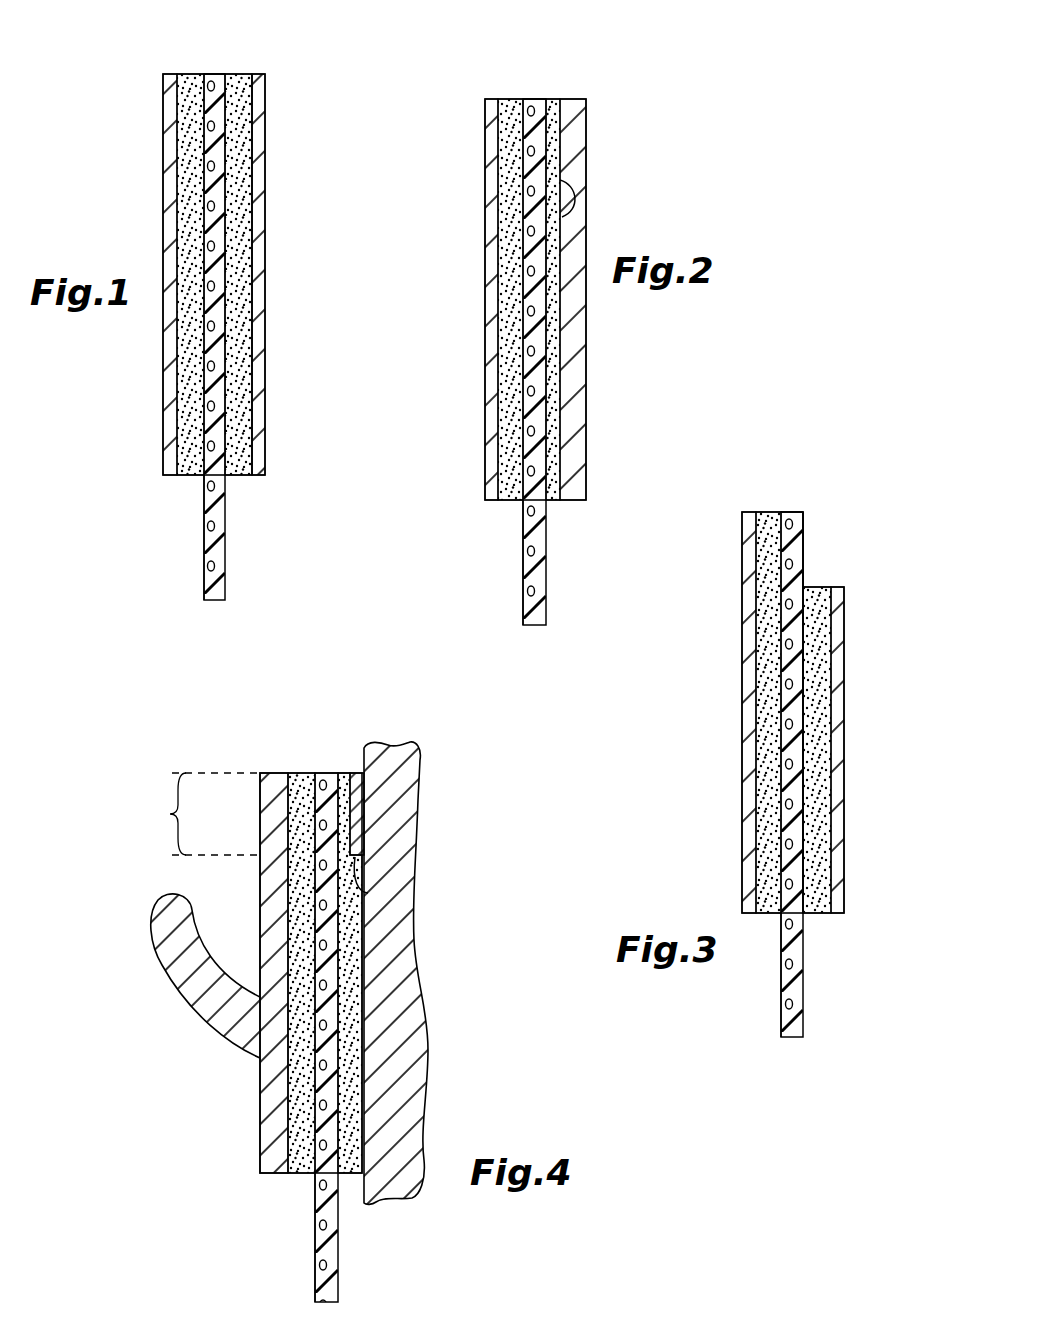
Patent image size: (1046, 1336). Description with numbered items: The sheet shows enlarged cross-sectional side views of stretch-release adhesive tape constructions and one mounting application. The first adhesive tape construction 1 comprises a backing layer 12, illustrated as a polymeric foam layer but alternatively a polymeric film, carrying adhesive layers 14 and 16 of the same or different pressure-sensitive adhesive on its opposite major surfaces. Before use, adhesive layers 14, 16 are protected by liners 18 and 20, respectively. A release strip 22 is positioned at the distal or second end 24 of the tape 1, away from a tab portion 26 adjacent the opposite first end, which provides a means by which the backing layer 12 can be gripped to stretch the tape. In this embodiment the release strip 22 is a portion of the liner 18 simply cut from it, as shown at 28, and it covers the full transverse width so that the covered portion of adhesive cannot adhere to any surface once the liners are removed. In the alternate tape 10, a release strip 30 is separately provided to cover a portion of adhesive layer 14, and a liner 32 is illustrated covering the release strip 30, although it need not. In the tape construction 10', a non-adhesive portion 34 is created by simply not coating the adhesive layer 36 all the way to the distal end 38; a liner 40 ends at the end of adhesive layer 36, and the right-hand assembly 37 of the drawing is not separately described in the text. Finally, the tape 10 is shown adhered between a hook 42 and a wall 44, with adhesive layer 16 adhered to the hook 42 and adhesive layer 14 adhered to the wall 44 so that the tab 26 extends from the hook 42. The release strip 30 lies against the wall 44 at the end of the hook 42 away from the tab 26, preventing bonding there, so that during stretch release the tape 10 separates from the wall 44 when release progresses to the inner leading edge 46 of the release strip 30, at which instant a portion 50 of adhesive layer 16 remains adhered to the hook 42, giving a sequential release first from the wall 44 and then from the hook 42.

In FIG. 1, the adhesive tape construction 1 is at (211, 309).
In FIG. 2, the tape 10 is at (534, 327).
In FIG. 4, the tape 10 is at (303, 1013).
In FIG. 3, the tape construction 10' is at (772, 748).
In FIG. 1, the backing layer 12 is at (218, 238).
In FIG. 2, the backing layer 12 is at (540, 355).
In FIG. 3, the backing layer 12 is at (797, 775).
In FIG. 4, the backing layer 12 is at (333, 1048).
In FIG. 1, the adhesive layer 14 is at (242, 476).
In FIG. 2, the adhesive layer 14 is at (565, 501).
In FIG. 4, the adhesive layer 14 is at (353, 1175).
In FIG. 1, the adhesive layer 16 is at (193, 476).
In FIG. 2, the adhesive layer 16 is at (512, 501).
In FIG. 3, the adhesive layer 16 is at (766, 914).
In FIG. 4, the adhesive layer 16 is at (301, 1175).
In FIG. 1, the liner 18 is at (266, 362).
In FIG. 1, the liner 20 is at (163, 322).
In FIG. 2, the liner 20 is at (486, 266).
In FIG. 3, the liner 20 is at (742, 730).
In FIG. 1, the release strip 22 is at (266, 121).
In FIG. 1, the second end 24 is at (211, 74).
In FIG. 2, the second end 24 is at (535, 99).
In FIG. 1, the tab portion 26 is at (212, 594).
In FIG. 2, the tab portion 26 is at (530, 617).
In FIG. 3, the tab portion 26 is at (805, 1012).
In FIG. 4, the tab portion 26 is at (340, 1271).
In FIG. 1, the cut 28 is at (258, 160).
In FIG. 2, the release strip 30 is at (572, 99).
In FIG. 4, the release strip 30 is at (357, 773).
In FIG. 2, the liner 32 is at (587, 401).
In FIG. 3, the non-adhesive portion 34 is at (805, 548).
In FIG. 3, the adhesive layer 36 is at (820, 914).
In FIG. 3, the second substrate assembly 37 is at (822, 587).
In FIG. 3, the distal end 38 is at (788, 512).
In FIG. 3, the liner 40 is at (845, 791).
In FIG. 4, the hook 42 is at (176, 990).
In FIG. 4, the wall 44 is at (428, 1006).
In FIG. 2, the inner leading edge 46 is at (568, 206).
In FIG. 4, the inner leading edge 46 is at (368, 893).
In FIG. 4, the portion 50 is at (198, 814).